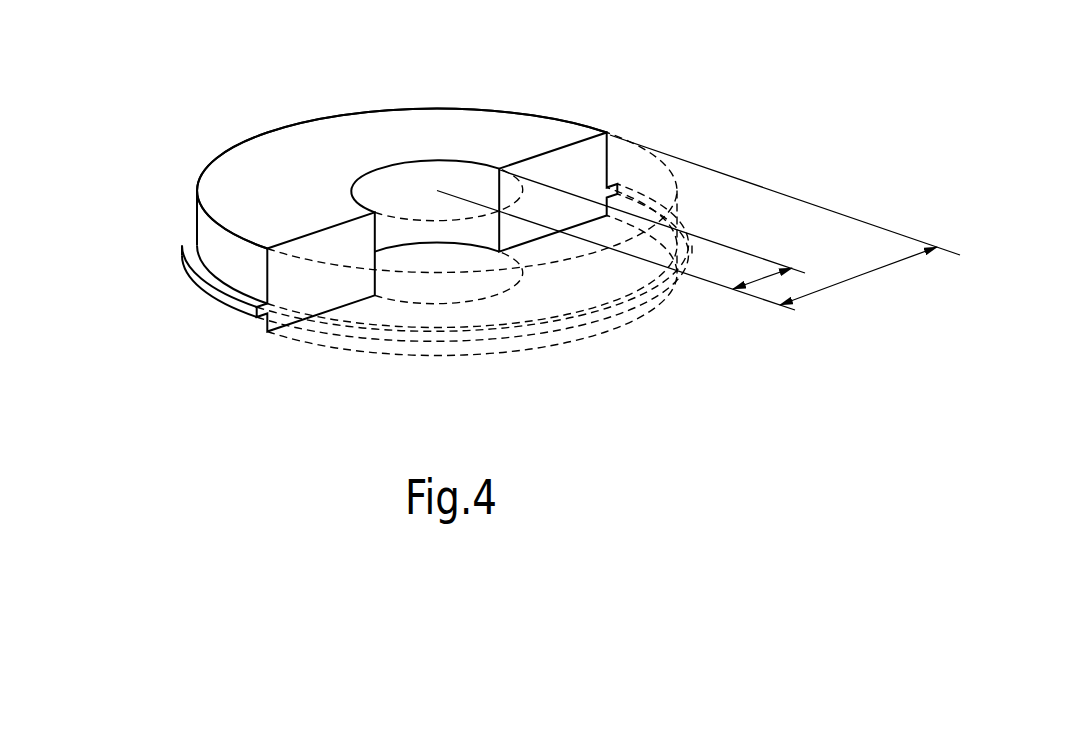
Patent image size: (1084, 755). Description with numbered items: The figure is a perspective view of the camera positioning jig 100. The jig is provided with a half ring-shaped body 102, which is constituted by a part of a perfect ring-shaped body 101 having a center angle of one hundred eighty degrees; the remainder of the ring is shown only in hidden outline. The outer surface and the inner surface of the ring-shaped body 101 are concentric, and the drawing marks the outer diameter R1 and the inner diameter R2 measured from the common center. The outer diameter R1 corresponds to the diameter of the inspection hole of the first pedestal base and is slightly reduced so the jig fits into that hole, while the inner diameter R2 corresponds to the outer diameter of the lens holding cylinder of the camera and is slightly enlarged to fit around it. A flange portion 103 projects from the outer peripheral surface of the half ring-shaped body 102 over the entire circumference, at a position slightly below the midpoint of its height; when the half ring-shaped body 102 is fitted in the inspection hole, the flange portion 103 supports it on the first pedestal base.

The camera positioning jig 100 is at (232, 123).
The perfect ring-shaped body 101 is at (388, 304).
The half ring-shaped body 102 is at (392, 130).
The flange portion 103 is at (195, 226).
The outer diameter R1 is at (698, 224).
The inner diameter R2 is at (652, 230).